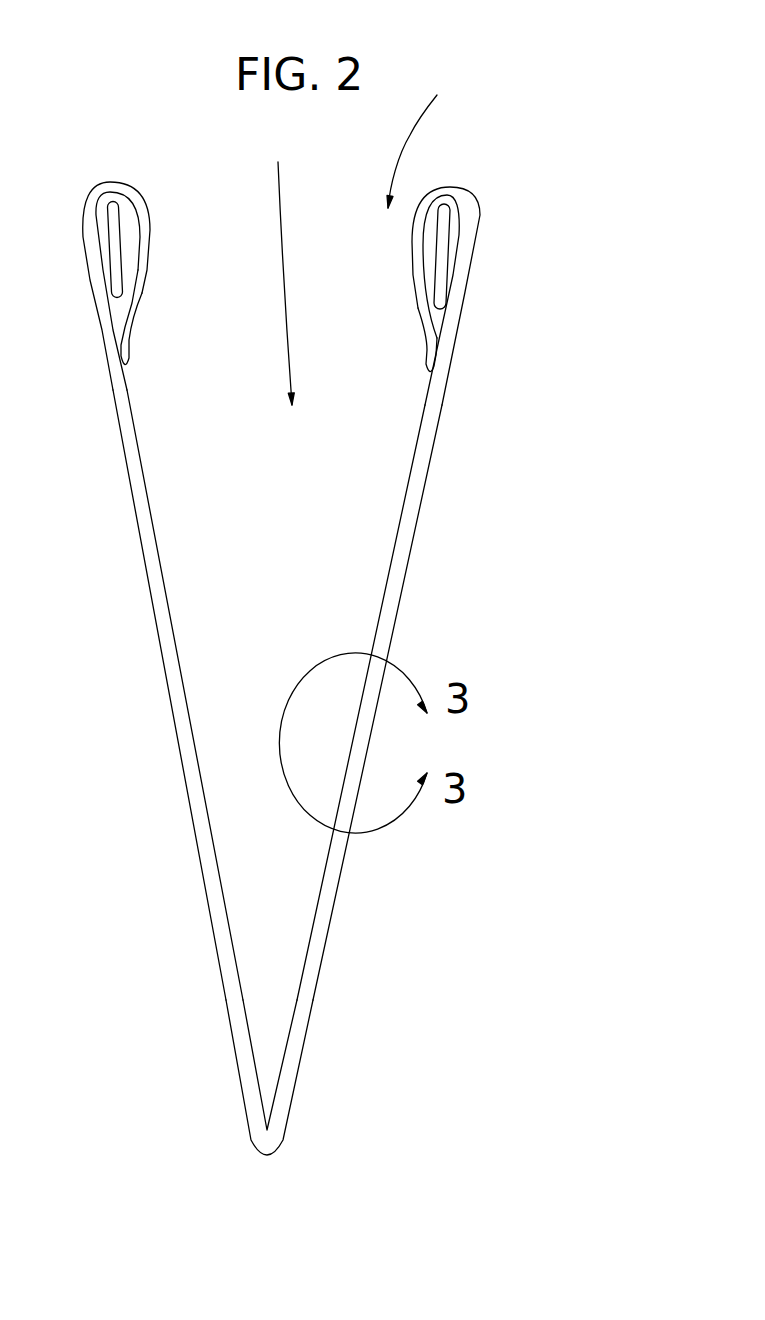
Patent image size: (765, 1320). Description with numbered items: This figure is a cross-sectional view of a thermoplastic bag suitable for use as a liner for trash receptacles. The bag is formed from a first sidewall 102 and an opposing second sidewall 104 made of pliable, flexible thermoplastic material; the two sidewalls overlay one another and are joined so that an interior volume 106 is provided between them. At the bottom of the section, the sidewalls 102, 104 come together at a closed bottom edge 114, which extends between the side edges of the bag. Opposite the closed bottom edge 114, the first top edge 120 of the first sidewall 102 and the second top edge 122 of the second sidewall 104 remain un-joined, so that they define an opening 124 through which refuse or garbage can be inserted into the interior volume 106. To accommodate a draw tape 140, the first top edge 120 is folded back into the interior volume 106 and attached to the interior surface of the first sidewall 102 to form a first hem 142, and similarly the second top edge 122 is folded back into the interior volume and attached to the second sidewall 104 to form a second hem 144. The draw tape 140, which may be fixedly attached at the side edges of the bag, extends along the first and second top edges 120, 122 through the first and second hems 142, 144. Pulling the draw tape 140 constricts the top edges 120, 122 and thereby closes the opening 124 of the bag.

The first sidewall 102 is at (417, 538).
The second sidewall 104 is at (153, 615).
The interior volume 106 is at (285, 269).
The closed bottom edge 114 is at (267, 1157).
The first top edge 120 is at (453, 187).
The second top edge 122 is at (112, 180).
The opening 124 is at (427, 136).
The draw tape 140 is at (120, 238).
The first hem 142 is at (412, 270).
The second hem 144 is at (146, 290).